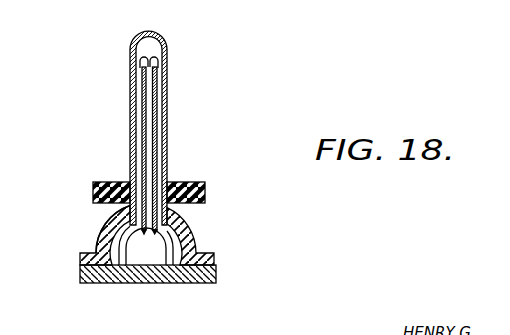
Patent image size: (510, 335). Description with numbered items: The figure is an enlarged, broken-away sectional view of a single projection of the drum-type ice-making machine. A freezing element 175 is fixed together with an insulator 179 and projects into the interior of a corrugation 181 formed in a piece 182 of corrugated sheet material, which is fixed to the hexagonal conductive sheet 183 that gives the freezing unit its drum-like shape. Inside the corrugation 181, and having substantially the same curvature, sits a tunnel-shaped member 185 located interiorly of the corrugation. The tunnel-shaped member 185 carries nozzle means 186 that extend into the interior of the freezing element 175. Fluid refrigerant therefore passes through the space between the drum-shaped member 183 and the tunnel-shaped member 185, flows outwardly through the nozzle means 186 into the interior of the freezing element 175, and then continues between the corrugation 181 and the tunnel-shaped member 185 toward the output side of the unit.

The freezing element 175 is at (167, 88).
The nozzle means 186 is at (157, 143).
The insulator 179 is at (116, 182).
The corrugation 181 is at (192, 231).
The piece of corrugated sheet material 182 is at (102, 233).
The hexagonal conductive sheet 183 is at (144, 274).
The tunnel-shaped member 185 is at (175, 254).